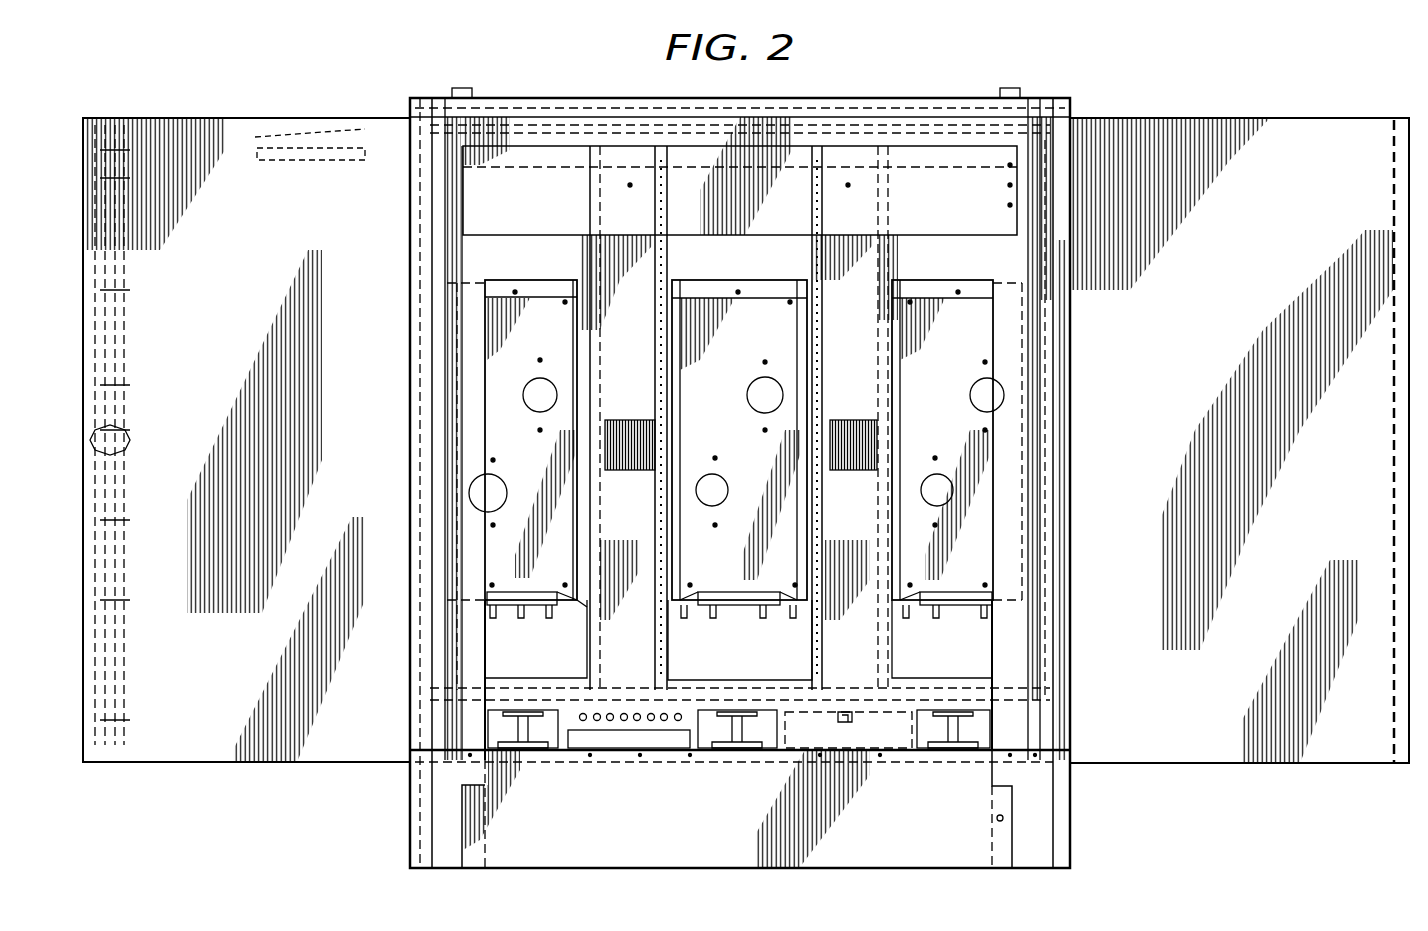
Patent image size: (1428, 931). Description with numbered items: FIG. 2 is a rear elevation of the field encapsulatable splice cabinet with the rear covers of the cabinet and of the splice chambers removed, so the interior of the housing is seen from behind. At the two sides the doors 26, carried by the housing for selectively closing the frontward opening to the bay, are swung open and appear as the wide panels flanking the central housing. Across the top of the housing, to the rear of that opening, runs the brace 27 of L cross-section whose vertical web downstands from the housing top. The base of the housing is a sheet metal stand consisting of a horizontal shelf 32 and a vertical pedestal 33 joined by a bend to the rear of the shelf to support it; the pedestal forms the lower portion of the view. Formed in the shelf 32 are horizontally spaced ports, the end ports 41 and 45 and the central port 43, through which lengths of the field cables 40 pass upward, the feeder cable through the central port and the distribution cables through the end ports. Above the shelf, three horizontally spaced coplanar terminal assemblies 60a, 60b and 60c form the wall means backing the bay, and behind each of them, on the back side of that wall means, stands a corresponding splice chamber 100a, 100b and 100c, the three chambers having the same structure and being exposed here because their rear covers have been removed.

The doors 26 is at (220, 122).
The brace 27 is at (425, 138).
The cables 40 is at (455, 722).
The end port 41 is at (512, 756).
The horizontal shelf 32 is at (607, 764).
The central port 43 is at (730, 756).
The end port 45 is at (932, 756).
The vertical pedestal 33 is at (1012, 802).
The splice chamber 100a is at (553, 354).
The splice chamber 100b is at (767, 354).
The splice chamber 100c is at (976, 354).
The terminal assembly 60a is at (543, 659).
The terminal assembly 60b is at (759, 659).
The terminal assembly 60c is at (966, 659).